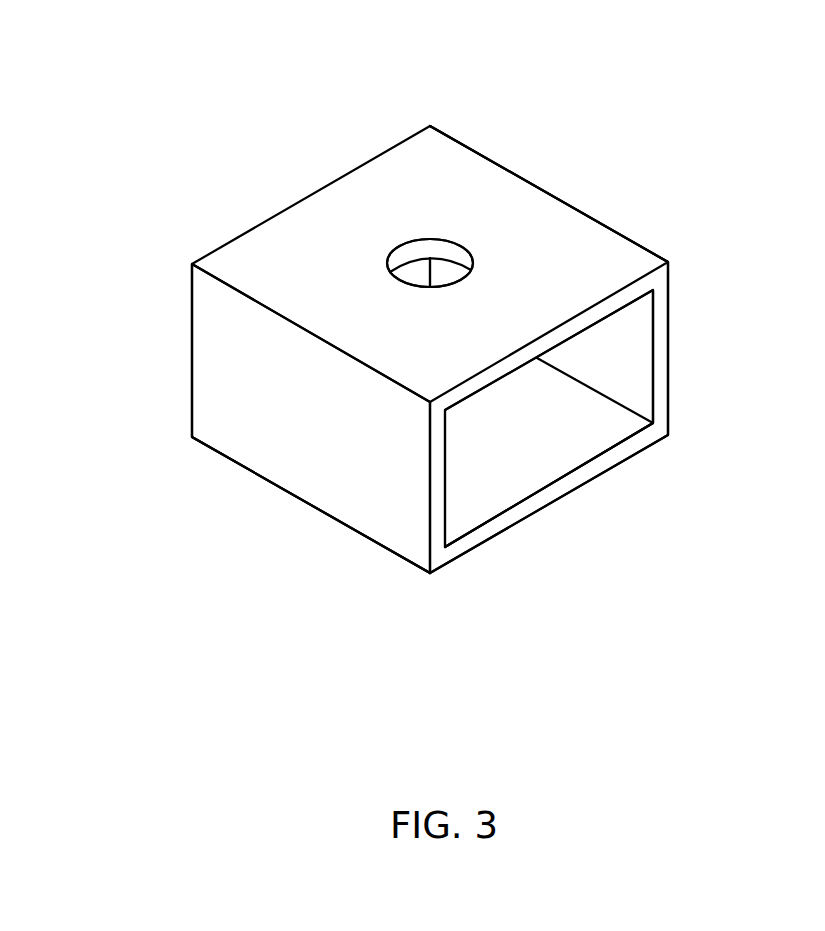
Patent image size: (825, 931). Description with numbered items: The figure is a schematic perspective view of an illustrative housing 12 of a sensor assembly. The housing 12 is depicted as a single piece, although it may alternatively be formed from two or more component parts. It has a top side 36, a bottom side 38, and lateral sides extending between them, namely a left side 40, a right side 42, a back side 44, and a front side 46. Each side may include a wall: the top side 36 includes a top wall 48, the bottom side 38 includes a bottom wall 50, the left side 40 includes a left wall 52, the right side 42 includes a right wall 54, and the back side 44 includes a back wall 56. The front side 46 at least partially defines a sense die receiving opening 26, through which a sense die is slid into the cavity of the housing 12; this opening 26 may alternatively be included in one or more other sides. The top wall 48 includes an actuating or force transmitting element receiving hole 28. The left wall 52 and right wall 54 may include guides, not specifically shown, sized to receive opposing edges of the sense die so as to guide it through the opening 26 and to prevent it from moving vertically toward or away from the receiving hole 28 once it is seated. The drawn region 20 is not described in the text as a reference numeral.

The housing 12 is at (682, 115).
The channel opening 20 is at (572, 433).
The sense die receiving opening 26 is at (627, 300).
The actuating or force transmitting element receiving hole 28 is at (446, 258).
The top side 36 is at (508, 213).
The bottom side 38 is at (582, 490).
The left side 40 is at (235, 403).
The right side 42 is at (674, 390).
The back side 44 is at (190, 318).
The front side 46 is at (440, 560).
The top wall 48 is at (602, 243).
The bottom wall 50 is at (494, 510).
The left wall 52 is at (302, 482).
The right wall 54 is at (628, 350).
The back wall 56 is at (413, 264).